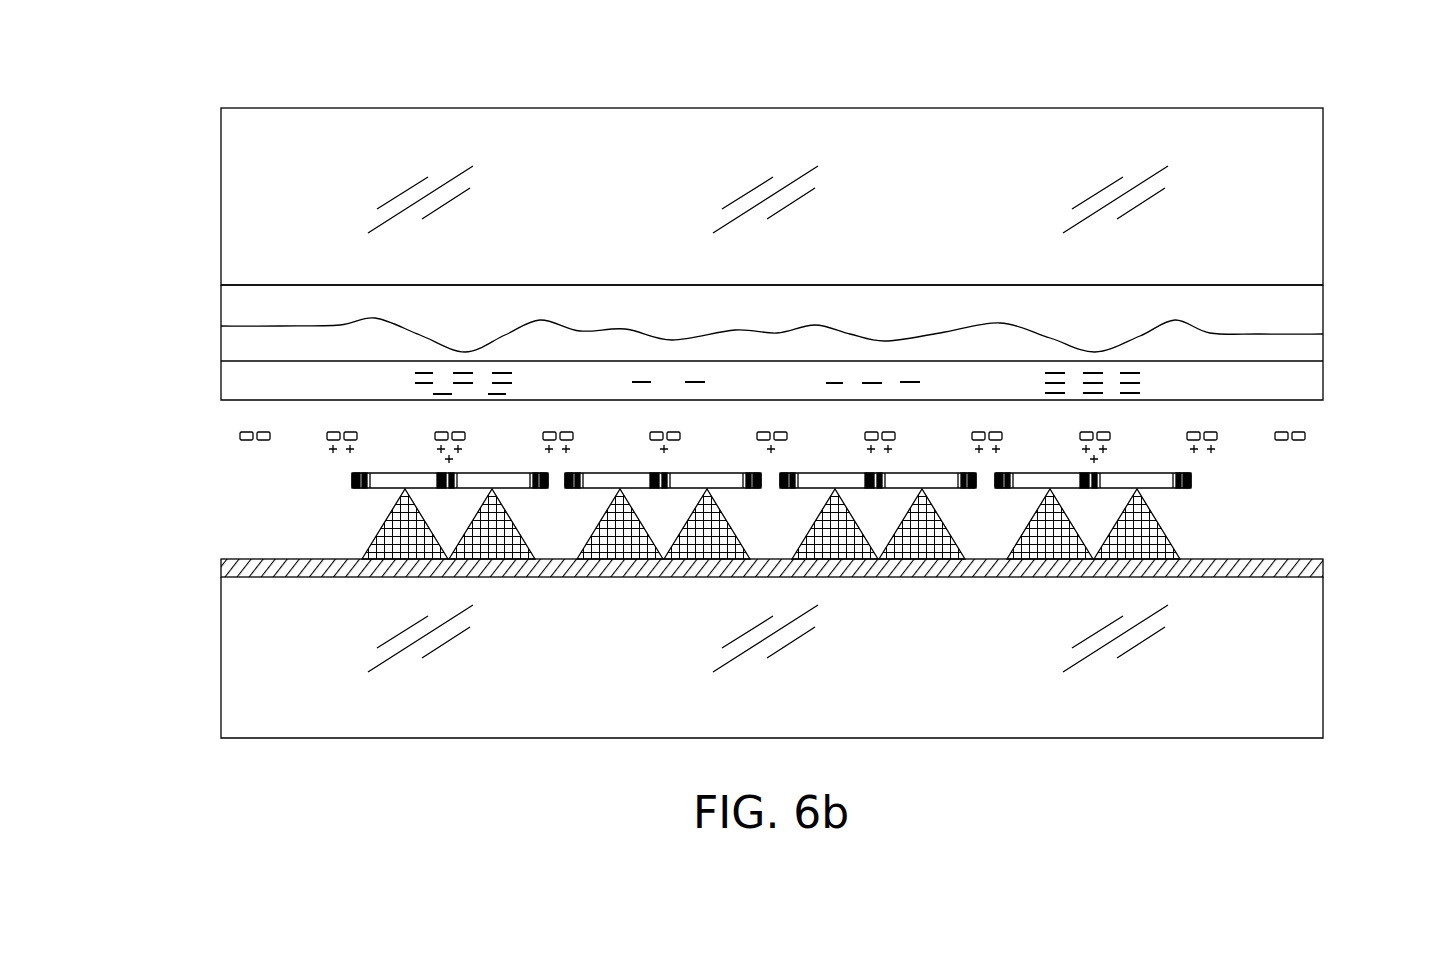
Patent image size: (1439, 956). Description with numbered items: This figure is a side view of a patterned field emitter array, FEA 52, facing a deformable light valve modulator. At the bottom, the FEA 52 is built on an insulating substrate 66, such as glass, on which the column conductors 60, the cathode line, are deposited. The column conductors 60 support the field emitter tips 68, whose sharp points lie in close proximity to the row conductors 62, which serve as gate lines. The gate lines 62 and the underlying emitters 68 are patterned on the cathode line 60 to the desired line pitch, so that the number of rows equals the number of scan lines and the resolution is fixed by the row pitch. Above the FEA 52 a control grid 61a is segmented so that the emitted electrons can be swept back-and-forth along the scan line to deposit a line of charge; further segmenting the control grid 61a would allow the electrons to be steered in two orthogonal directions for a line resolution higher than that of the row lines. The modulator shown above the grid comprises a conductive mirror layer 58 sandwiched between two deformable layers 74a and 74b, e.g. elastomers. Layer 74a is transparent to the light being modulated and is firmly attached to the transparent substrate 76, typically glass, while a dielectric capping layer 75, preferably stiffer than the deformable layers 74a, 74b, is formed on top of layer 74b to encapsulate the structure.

The transparent substrate 76 is at (586, 225).
The deformable layer 74a is at (212, 302).
The mirror layer 58 is at (221, 327).
The deformable layer 74b is at (213, 352).
The capping layer 75 is at (1335, 380).
The control grid 61a is at (220, 439).
The row conductors 62 is at (1213, 479).
The field emitter tips 68 is at (1190, 535).
The FEA 52 is at (766, 584).
The column conductors 60 is at (1332, 571).
The insulating substrate 66 is at (586, 677).